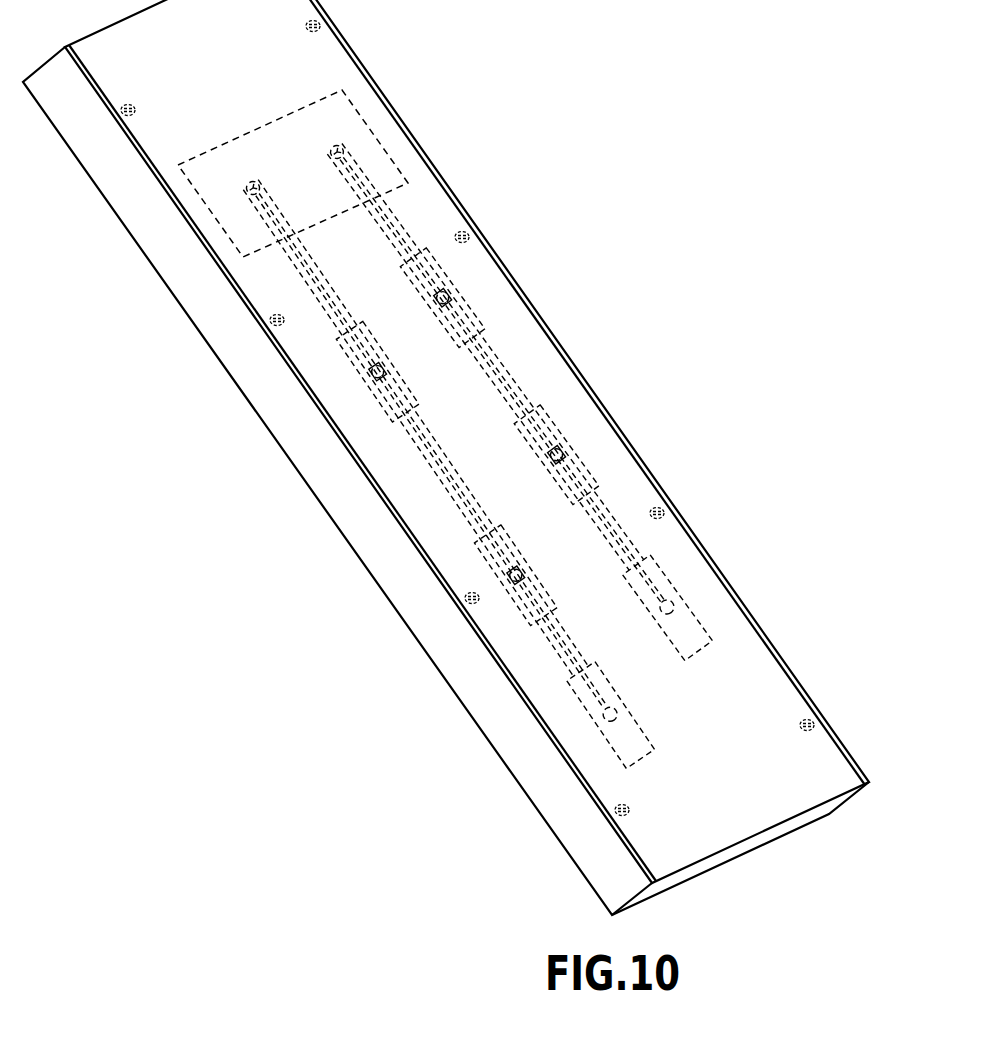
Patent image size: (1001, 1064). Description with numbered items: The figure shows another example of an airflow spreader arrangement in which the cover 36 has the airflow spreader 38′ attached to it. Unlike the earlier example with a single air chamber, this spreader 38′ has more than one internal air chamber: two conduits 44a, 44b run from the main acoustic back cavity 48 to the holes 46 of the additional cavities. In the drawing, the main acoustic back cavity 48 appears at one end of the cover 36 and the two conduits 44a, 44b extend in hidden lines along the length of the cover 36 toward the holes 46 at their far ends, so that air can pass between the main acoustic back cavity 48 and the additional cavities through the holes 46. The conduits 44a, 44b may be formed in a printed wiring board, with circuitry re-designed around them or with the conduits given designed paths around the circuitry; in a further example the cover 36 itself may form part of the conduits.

The cover 36 is at (367, 560).
The airflow spreader 38′ is at (493, 277).
The conduit 44a is at (330, 308).
The conduit 44b is at (515, 385).
The hole 46 is at (523, 560).
The main acoustic back cavity 48 is at (217, 203).